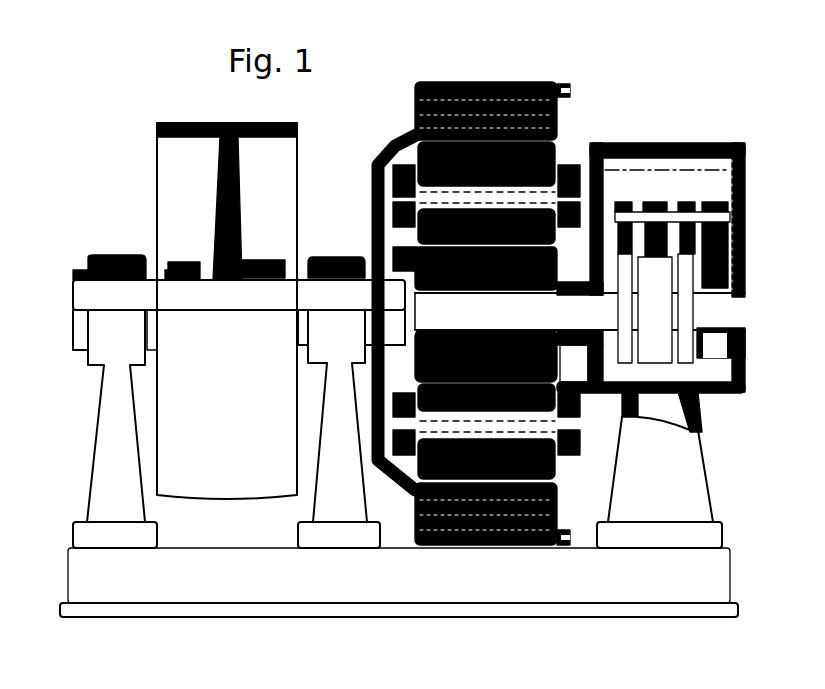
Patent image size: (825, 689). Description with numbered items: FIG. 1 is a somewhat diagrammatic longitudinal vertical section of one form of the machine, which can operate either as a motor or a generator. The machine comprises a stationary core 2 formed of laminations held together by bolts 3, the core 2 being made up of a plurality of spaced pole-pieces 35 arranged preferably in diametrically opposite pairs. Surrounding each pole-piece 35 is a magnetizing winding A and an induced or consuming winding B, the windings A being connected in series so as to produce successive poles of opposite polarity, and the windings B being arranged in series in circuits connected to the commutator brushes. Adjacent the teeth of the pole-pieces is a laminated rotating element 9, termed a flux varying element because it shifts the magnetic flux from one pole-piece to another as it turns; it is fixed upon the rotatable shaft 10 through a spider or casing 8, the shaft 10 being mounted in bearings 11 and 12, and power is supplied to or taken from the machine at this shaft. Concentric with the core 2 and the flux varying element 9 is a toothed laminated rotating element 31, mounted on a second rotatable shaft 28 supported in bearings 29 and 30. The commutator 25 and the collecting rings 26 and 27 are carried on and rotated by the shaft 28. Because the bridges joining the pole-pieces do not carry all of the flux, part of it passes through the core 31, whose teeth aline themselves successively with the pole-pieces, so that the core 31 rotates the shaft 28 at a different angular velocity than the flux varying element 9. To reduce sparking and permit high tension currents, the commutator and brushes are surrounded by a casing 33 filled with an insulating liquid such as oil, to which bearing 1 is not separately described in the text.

The bearing housing 1 is at (592, 394).
The stationary core 2 is at (553, 141).
The bolts 3 is at (610, 148).
The spider or casing 8 is at (397, 140).
The rotating element (flux varying element) 9 is at (497, 82).
The rotatable shaft 10 is at (248, 305).
The bearing 11 is at (342, 256).
The bearing 12 is at (118, 256).
The commutator 25 is at (655, 282).
The collecting ring 26 is at (625, 364).
The collecting ring 27 is at (687, 360).
The rotatable shaft 28 is at (543, 300).
The bearing 29 is at (574, 363).
The bearing 30 is at (744, 334).
The rotating element (core) 31 is at (416, 362).
The casing 33 is at (742, 192).
The pole-pieces 35 is at (556, 118).
The magnetizing winding A is at (570, 165).
The induced or consuming winding B is at (578, 207).